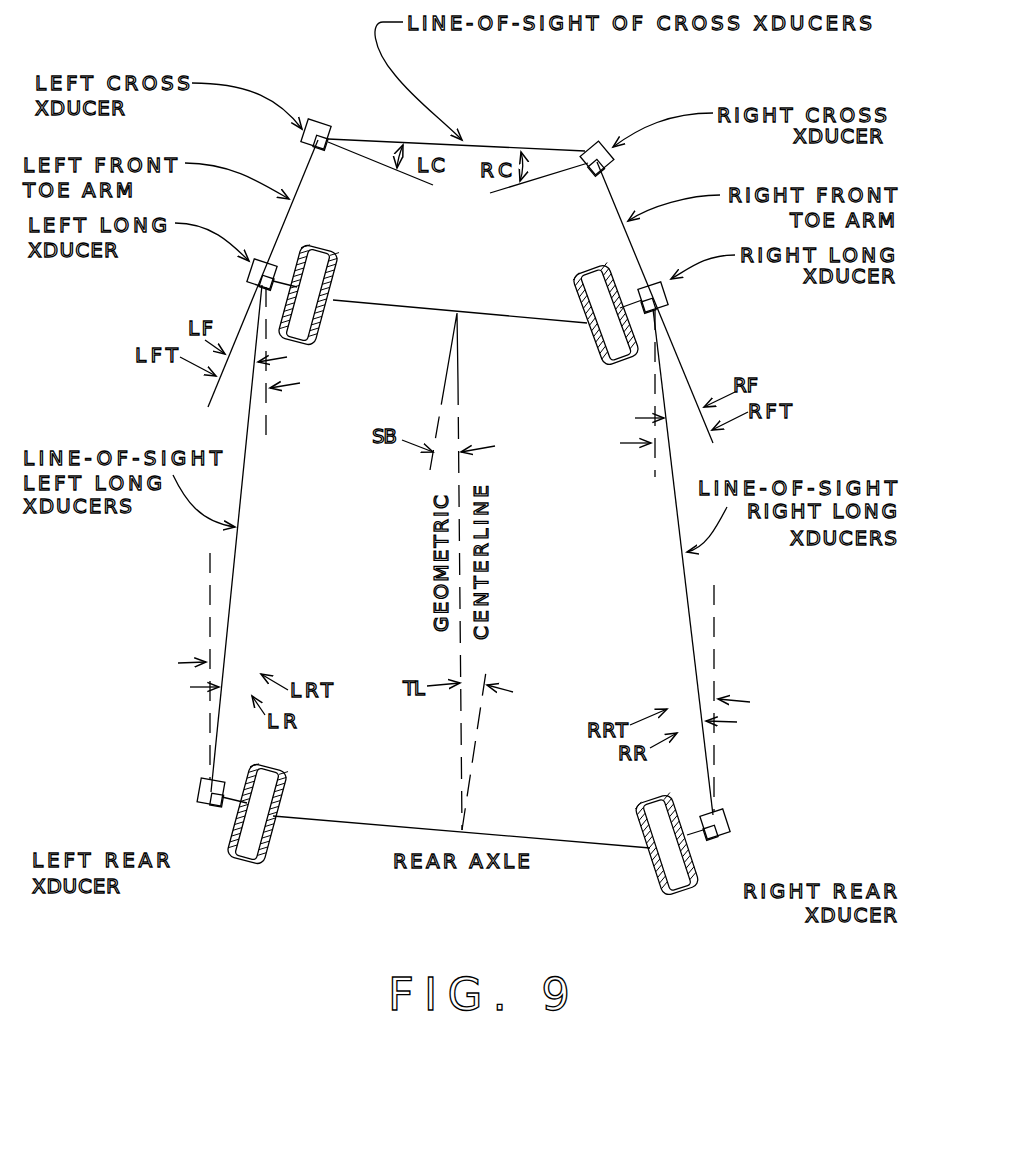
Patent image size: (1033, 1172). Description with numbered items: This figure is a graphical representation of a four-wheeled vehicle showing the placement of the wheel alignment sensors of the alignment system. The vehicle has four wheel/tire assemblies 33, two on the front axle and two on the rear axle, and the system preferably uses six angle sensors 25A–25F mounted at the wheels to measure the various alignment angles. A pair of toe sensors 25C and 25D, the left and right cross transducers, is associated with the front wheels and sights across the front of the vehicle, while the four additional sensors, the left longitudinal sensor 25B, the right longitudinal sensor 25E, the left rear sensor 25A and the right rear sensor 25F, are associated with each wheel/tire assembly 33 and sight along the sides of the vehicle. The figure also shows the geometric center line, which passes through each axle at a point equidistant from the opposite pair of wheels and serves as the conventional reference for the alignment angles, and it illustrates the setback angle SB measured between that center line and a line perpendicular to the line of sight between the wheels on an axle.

The angle sensor 25A is at (205, 808).
The angle sensor 25B is at (252, 278).
The toe sensor 25C is at (313, 121).
The toe sensor 25D is at (598, 146).
The angle sensor 25E is at (664, 303).
The angle sensor 25F is at (742, 888).
The wheel/tire assembly 33 is at (300, 320).